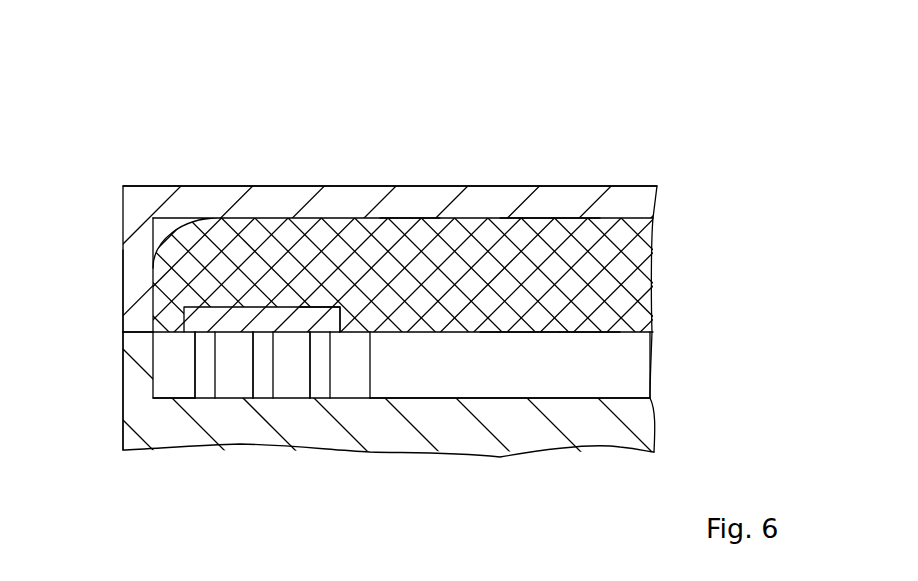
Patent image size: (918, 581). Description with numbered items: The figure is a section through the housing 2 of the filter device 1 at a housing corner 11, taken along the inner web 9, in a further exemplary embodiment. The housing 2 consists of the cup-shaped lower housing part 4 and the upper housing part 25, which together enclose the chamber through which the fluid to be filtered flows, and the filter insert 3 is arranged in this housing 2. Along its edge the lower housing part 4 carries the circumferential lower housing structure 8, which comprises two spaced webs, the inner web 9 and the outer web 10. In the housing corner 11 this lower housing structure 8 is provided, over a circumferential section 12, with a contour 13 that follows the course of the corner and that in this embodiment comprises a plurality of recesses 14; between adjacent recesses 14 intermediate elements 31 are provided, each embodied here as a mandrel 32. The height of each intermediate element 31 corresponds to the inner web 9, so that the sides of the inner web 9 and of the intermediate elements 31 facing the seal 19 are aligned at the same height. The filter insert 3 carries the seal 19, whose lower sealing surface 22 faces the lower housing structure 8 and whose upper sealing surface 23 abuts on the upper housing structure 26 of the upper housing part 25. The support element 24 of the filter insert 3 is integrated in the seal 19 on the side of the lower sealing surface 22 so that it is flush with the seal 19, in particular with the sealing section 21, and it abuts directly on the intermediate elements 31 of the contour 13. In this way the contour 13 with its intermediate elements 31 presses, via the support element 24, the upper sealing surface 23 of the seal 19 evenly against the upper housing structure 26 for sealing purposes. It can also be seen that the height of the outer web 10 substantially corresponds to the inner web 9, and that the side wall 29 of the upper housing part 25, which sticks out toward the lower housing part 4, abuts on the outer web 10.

The filter device 1 is at (742, 153).
The housing 2 is at (630, 158).
The filter insert 3 is at (497, 217).
The lower housing part 4 is at (122, 400).
The lower housing structure 8 is at (174, 395).
The inner web 9 is at (640, 362).
The outer web 10 is at (138, 351).
The housing corner 11 is at (125, 176).
The circumferential section 12 is at (220, 178).
The contour 13 is at (350, 311).
The recess 14 is at (163, 373).
The seal 19 is at (648, 276).
The sealing section 21 is at (580, 337).
The lower sealing surface 22 is at (519, 337).
The upper sealing surface 23 is at (548, 216).
The support element 24 is at (284, 307).
The upper housing part 25 is at (443, 186).
The upper housing structure 26 is at (405, 221).
The side wall 29 is at (138, 287).
The intermediate element 31 is at (205, 388).
The mandrel 32 is at (312, 387).